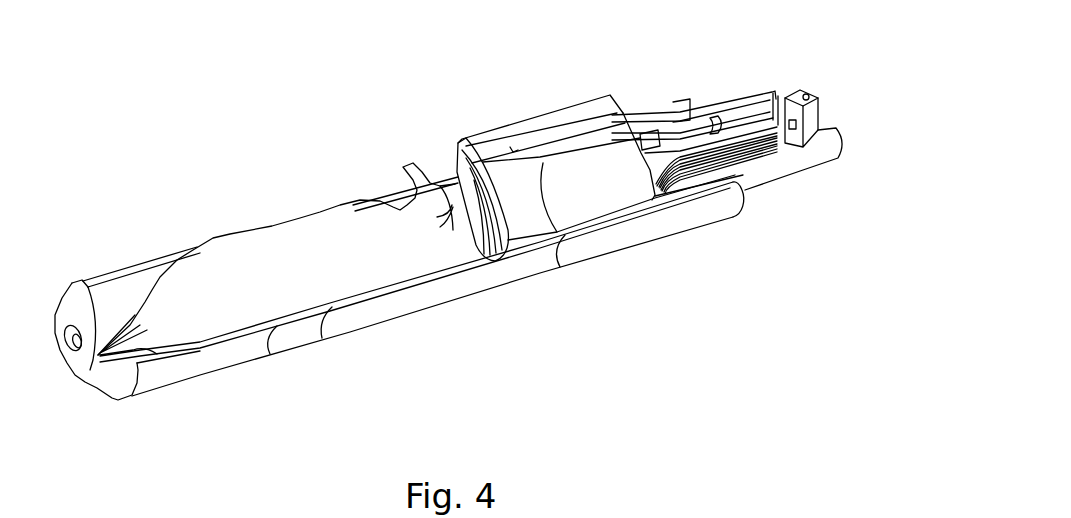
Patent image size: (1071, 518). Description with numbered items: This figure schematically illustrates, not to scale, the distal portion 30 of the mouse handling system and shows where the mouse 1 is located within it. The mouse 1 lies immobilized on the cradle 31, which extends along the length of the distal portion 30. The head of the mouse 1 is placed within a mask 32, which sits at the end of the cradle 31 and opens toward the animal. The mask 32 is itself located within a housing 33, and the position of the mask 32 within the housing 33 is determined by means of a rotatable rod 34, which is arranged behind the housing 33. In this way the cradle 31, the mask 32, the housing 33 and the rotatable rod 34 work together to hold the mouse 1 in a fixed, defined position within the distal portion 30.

The distal portion 30 is at (316, 160).
The cradle 31 is at (372, 314).
The mask 32 is at (498, 233).
The housing 33 is at (572, 210).
The rotatable rod 34 is at (673, 138).
The mouse 1 is at (437, 220).